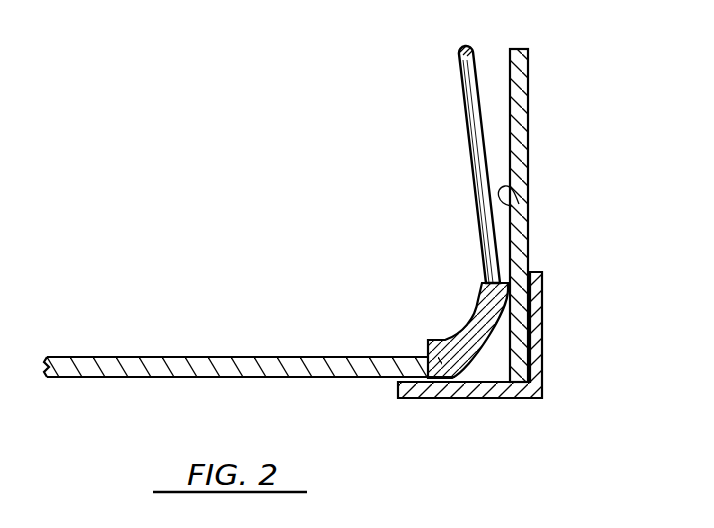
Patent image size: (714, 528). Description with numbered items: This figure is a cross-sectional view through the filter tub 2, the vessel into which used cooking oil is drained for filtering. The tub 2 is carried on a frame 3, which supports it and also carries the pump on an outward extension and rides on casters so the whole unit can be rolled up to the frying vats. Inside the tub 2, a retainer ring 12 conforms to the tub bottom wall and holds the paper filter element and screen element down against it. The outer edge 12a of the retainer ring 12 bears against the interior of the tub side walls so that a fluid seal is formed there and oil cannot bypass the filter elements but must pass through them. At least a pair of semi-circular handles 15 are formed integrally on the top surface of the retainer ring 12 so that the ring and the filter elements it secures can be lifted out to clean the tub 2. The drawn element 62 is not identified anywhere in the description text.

The filter tub 2 is at (519, 142).
The frame 3 is at (527, 393).
The retainer ring 12 is at (509, 272).
The outer edge of retainer ring 12a is at (497, 337).
The semi-circular handles 15 is at (463, 91).
The channel 62 is at (512, 206).